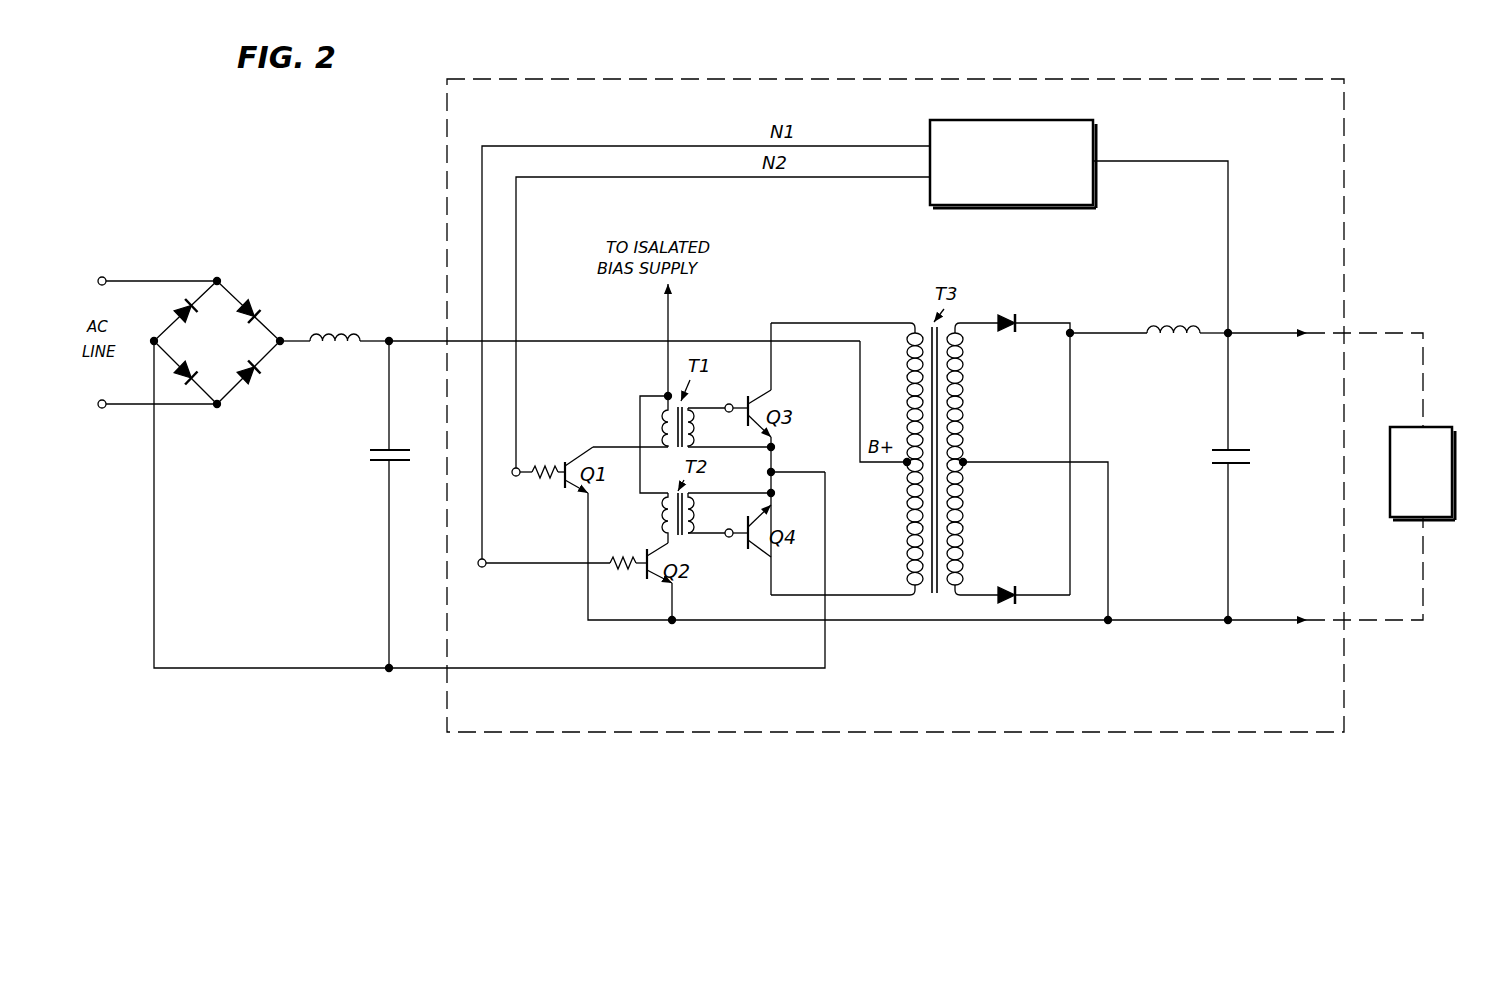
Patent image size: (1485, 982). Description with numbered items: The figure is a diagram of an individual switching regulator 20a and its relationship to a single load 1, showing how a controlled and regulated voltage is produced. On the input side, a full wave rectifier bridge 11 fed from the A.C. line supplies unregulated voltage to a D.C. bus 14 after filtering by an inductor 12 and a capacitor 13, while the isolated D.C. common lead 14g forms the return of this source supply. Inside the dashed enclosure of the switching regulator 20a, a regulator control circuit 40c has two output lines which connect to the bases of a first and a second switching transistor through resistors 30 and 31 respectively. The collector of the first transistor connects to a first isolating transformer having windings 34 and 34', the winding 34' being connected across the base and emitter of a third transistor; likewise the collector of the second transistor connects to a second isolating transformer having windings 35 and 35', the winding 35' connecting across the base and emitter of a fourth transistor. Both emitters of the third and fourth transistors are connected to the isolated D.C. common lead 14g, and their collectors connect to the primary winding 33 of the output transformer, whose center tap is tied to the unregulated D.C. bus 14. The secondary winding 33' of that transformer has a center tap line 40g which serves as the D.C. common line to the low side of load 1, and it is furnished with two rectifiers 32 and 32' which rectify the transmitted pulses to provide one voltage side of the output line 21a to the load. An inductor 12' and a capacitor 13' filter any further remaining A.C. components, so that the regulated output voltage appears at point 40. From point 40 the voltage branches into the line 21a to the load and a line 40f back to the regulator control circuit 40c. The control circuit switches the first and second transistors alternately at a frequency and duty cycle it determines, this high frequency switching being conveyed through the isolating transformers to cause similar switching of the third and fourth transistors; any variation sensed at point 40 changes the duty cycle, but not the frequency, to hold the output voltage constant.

The load 1 is at (1381, 476).
The full wave rectifier bridge 11 is at (218, 305).
The inductor 12 is at (335, 318).
The capacitor 13 is at (367, 504).
The D.C. bus 14 is at (389, 337).
The isolated D.C. common lead 14g is at (330, 670).
The switching regulator 20a is at (576, 738).
The output line 21a is at (1292, 336).
The resistor 30 is at (538, 465).
The resistor 31 is at (615, 557).
The rectifier 32 is at (1029, 307).
The rectifier 32' is at (1018, 573).
The winding 33 is at (897, 459).
The secondary winding 33' is at (979, 459).
The winding 34 is at (636, 421).
The winding 34' is at (714, 427).
The winding 35 is at (643, 514).
The winding 35' is at (710, 513).
The point 40 is at (1272, 311).
The regulator control circuit 40c is at (1077, 126).
The line 40f is at (1228, 236).
The D.C. common line 40g is at (1108, 531).
The inductor 12' is at (1173, 310).
The capacitor 13' is at (1255, 517).